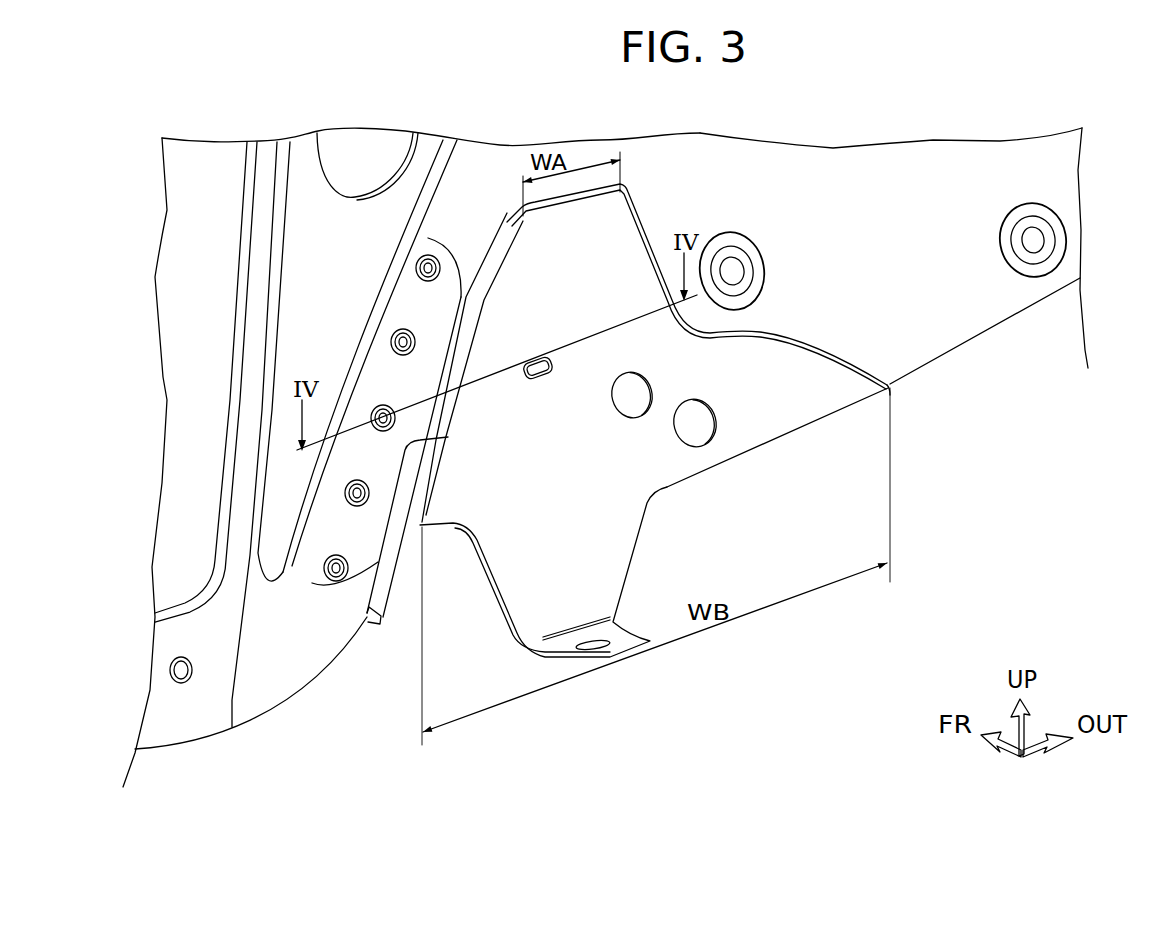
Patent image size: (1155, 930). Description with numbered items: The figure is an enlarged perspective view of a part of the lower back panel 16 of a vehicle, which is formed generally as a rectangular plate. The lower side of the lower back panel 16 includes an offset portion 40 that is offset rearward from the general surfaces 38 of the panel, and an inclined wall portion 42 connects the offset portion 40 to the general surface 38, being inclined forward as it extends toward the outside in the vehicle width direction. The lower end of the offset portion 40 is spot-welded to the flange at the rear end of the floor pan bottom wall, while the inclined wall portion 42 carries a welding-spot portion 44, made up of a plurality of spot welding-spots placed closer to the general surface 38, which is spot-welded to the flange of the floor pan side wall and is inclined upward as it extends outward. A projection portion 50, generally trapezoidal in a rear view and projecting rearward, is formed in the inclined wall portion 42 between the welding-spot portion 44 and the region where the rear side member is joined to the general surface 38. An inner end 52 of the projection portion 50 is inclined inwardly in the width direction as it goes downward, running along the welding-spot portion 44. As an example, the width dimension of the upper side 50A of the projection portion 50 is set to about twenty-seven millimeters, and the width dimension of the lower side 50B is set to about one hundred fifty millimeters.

The lower back panel 16 is at (947, 352).
The general surfaces 38 is at (1028, 182).
The offset portion 40 is at (190, 723).
The inclined wall portions 42 is at (470, 177).
The welding-spot portion 44 is at (421, 395).
The projection portion 50 is at (563, 437).
The upper side 50A is at (567, 208).
The lower side 50B is at (750, 428).
The inner end 52 is at (480, 357).